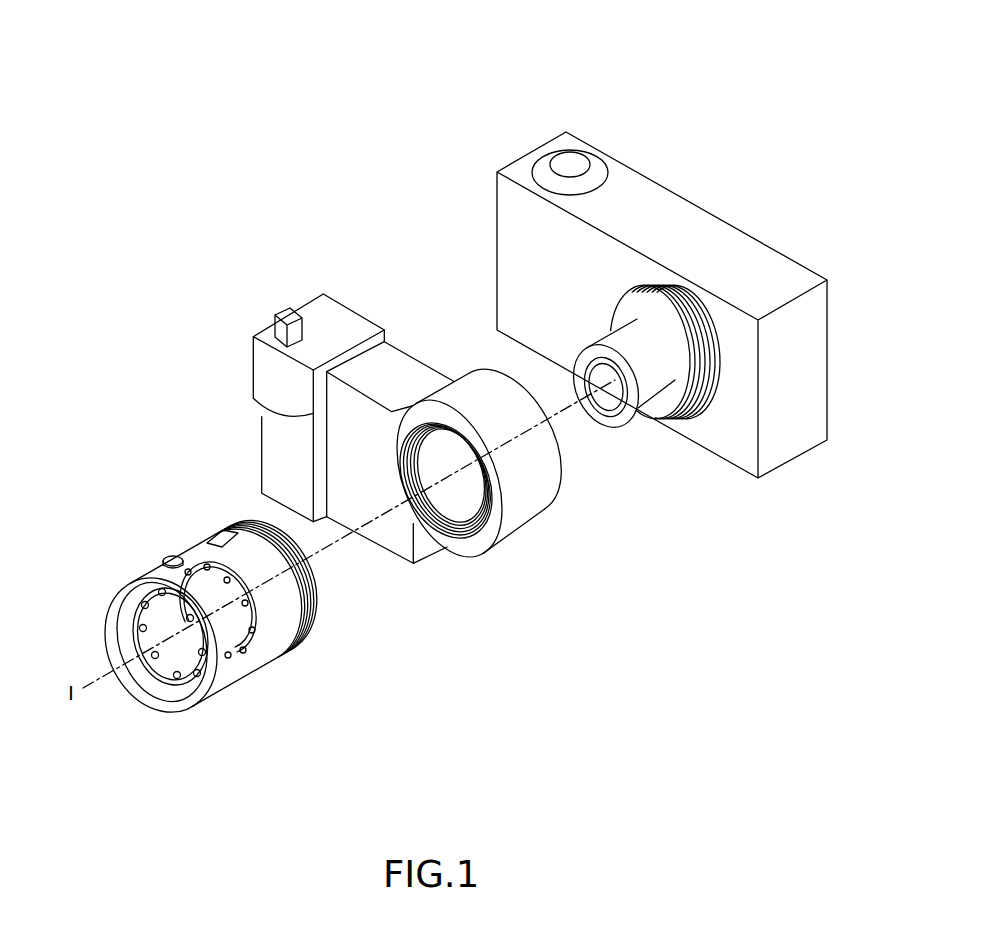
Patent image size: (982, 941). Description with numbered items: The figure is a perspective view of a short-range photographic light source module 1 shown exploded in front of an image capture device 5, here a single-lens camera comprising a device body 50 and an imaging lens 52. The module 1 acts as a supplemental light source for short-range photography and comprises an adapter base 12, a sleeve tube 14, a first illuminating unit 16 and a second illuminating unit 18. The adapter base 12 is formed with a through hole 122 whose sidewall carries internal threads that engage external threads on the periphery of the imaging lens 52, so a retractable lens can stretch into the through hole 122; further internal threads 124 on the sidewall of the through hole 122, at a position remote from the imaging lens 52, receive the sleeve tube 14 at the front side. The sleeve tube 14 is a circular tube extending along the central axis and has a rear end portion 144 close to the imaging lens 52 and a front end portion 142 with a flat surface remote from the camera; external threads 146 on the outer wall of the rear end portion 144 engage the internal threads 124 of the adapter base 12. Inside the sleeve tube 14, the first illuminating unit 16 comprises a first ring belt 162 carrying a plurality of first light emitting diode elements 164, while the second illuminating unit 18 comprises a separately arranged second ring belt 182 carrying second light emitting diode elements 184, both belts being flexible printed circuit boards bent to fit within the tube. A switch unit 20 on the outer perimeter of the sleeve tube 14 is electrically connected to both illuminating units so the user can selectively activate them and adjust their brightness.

The short-range photographic light source module 1 is at (535, 669).
The image capture device 5 is at (446, 136).
The adapter base 12 is at (526, 520).
The through hole 122 is at (426, 509).
The internal threads 124 is at (457, 545).
The sleeve tube 14 is at (188, 542).
The front end portion 142 is at (145, 580).
The rear end portion 144 is at (228, 523).
The external threads 146 is at (313, 625).
The first illuminating unit 16 is at (158, 683).
The first ring belt 162 is at (140, 642).
The first light emitting diode elements 164 is at (176, 680).
The second illuminating unit 18 is at (297, 632).
The second ring belt 182 is at (290, 647).
The second light emitting diode elements 184 is at (278, 664).
The switch unit 20 is at (168, 558).
The device body 50 is at (707, 230).
The imaging lens 52 is at (650, 398).